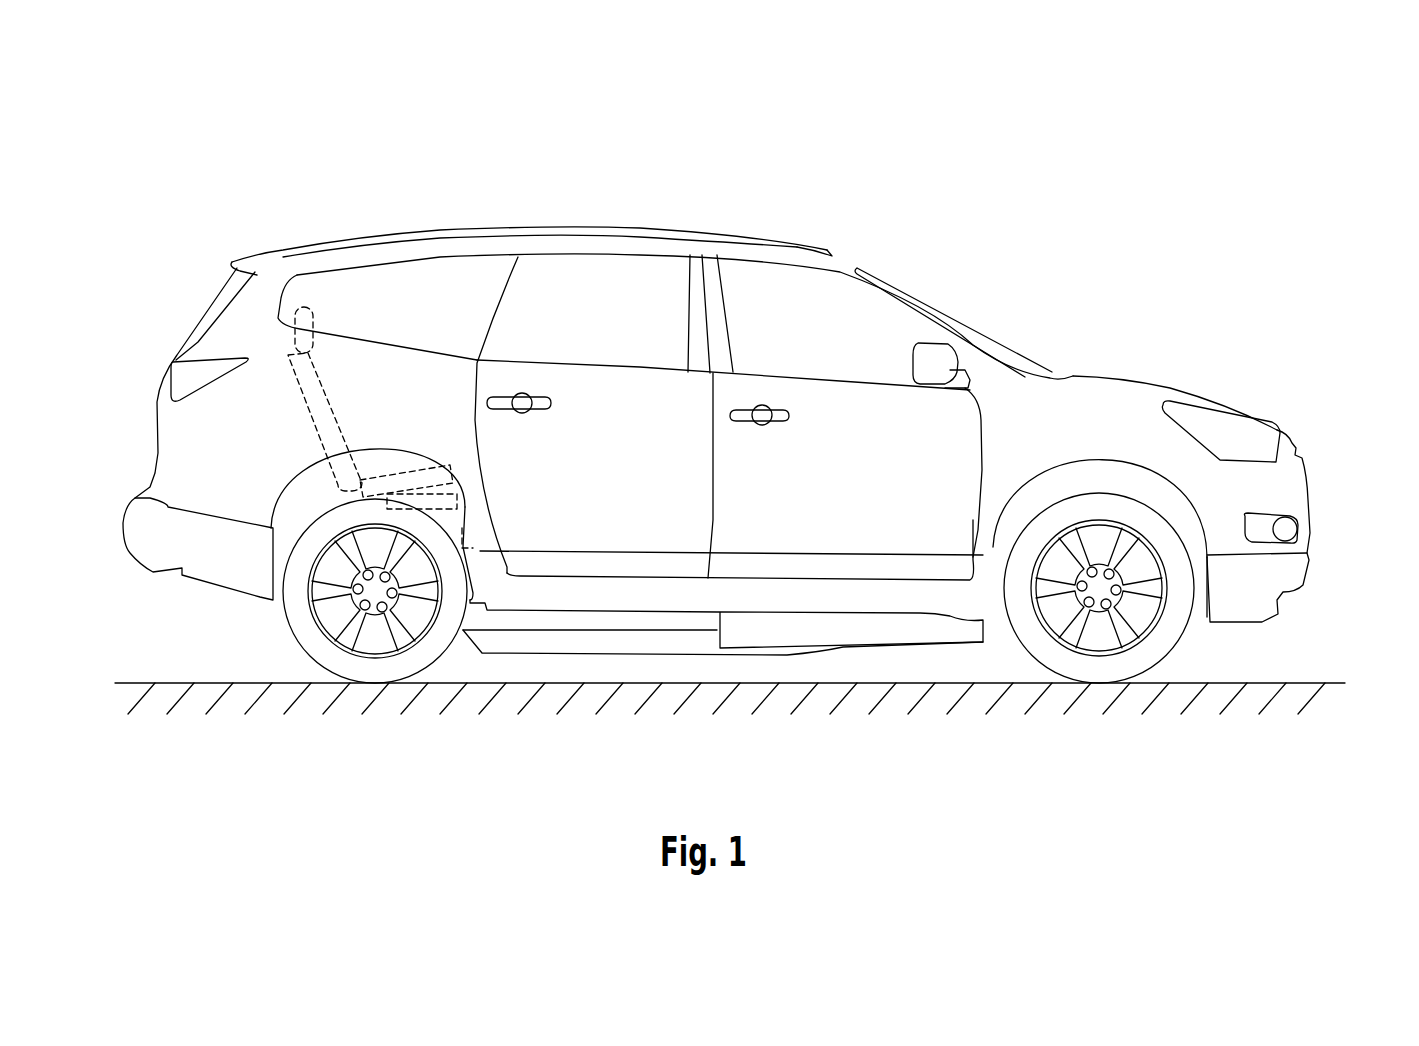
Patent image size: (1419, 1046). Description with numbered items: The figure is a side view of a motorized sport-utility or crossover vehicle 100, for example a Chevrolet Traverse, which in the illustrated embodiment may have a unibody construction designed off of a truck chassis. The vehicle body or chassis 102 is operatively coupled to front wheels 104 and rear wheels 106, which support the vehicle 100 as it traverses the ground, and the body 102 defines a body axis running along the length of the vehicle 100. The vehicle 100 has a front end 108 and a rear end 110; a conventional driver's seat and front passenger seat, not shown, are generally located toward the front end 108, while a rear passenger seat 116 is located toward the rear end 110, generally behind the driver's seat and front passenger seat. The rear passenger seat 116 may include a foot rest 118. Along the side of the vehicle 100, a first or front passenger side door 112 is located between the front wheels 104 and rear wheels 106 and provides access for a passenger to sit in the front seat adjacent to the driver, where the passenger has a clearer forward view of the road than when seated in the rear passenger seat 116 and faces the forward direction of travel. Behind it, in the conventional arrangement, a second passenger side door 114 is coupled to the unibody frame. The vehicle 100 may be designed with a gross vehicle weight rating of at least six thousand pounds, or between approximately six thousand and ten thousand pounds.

The vehicle 100 is at (813, 153).
The vehicle body 102 is at (1143, 400).
The front wheels 104 is at (1190, 627).
The rear wheels 106 is at (283, 613).
The front end 108 is at (1313, 492).
The rear end 110 is at (150, 422).
The front passenger side door 112 is at (862, 395).
The second passenger side door 114 is at (600, 387).
The rear passenger seat 116 is at (337, 413).
The foot rest 118 is at (475, 535).